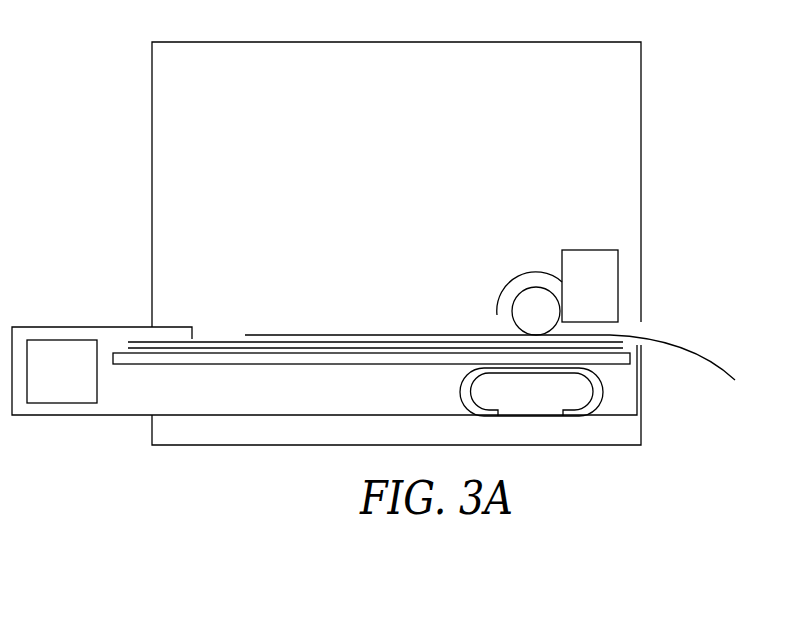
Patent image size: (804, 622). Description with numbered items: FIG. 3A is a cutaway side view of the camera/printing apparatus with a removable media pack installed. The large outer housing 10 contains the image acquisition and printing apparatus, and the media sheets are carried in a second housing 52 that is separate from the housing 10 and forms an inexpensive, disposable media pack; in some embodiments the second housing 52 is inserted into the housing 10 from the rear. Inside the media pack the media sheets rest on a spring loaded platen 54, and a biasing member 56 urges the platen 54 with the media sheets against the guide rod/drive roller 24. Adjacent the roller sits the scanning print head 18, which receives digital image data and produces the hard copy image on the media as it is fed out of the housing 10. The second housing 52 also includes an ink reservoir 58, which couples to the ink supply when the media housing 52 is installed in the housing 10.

The housing 10 is at (152, 105).
The scanning print head 18 is at (587, 258).
The guide rod/drive roller 24 is at (532, 316).
The second housing 52 is at (90, 327).
The spring loaded platen 54 is at (212, 365).
The biasing member 56 is at (465, 405).
The ink reservoir 58 is at (77, 387).